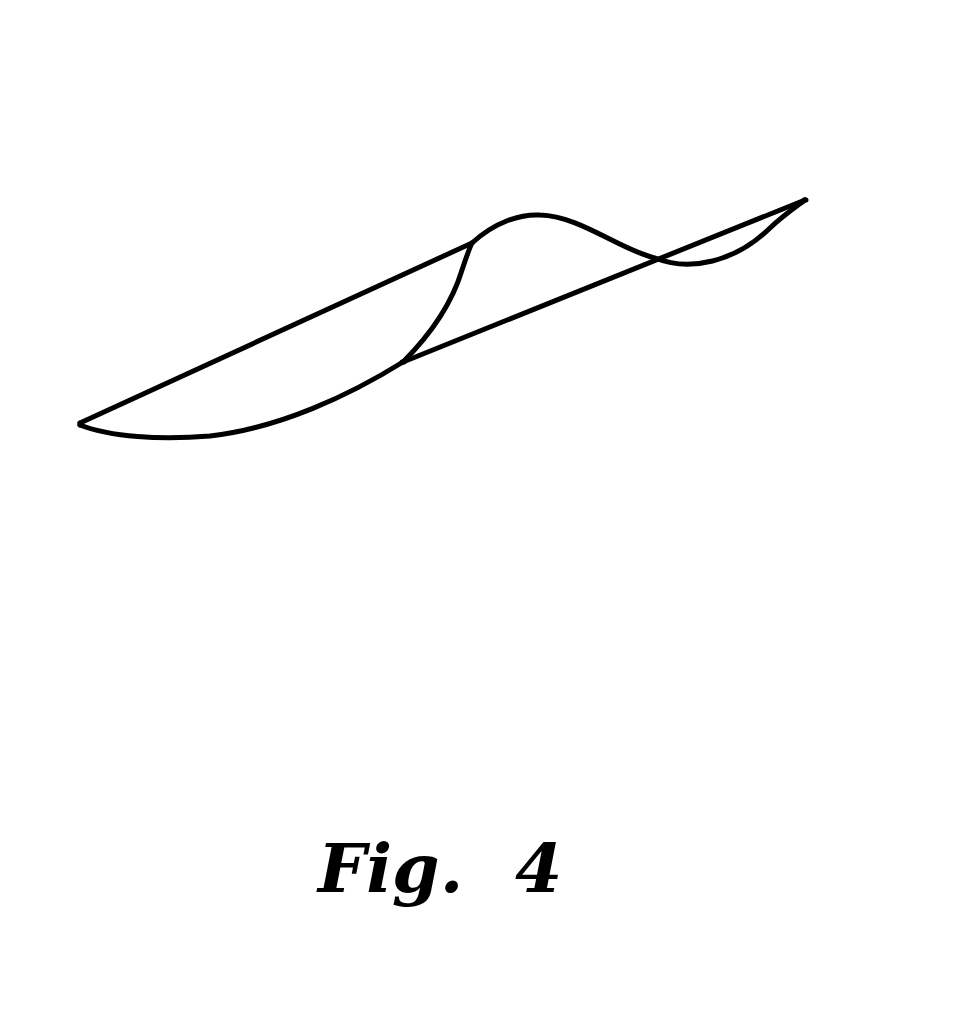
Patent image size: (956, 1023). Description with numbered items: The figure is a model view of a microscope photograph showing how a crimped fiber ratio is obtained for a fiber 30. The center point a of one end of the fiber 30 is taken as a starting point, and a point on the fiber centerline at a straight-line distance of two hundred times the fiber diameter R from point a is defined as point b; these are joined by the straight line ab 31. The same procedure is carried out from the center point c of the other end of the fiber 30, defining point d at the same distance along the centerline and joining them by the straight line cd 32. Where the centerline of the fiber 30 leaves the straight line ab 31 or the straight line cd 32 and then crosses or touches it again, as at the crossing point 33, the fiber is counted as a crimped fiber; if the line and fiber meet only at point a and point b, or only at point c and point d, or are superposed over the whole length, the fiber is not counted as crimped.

The fiber 30 is at (210, 437).
The straight line ab 31 is at (275, 336).
The straight line cd 32 is at (547, 305).
The crossing point 33 is at (655, 258).
The center point of one end of the fiber a is at (80, 424).
The point b is at (472, 243).
The center point of the other end of the fiber c is at (805, 200).
The point d is at (403, 362).